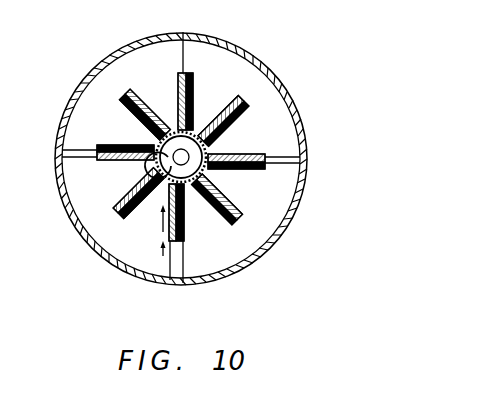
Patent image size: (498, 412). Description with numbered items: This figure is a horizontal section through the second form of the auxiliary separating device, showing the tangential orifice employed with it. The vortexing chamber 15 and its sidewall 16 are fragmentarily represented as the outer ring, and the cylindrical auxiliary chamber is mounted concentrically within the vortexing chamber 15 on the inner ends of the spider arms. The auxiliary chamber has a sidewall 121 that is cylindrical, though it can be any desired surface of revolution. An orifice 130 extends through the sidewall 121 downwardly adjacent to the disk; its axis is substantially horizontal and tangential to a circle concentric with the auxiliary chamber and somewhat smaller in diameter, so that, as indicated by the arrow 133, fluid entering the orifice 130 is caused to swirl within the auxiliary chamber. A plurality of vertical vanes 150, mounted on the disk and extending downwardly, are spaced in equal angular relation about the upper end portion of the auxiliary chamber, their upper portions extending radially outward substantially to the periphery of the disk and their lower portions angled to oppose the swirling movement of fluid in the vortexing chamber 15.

The vortexing chamber 15 is at (114, 46).
The sidewall 16 is at (273, 82).
The vertical vanes 150 is at (139, 131).
The sidewall 121 is at (213, 148).
The orifice 130 is at (164, 188).
The arrow 133 is at (163, 254).